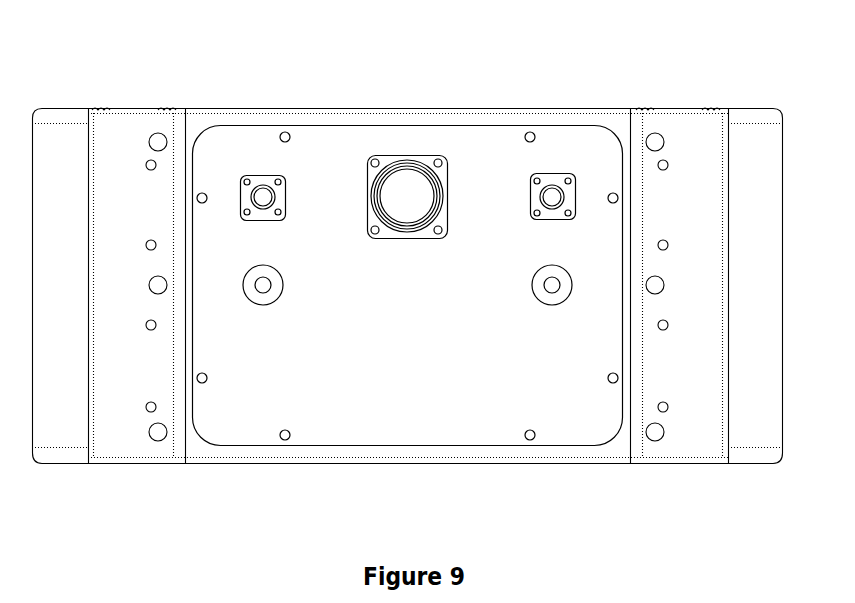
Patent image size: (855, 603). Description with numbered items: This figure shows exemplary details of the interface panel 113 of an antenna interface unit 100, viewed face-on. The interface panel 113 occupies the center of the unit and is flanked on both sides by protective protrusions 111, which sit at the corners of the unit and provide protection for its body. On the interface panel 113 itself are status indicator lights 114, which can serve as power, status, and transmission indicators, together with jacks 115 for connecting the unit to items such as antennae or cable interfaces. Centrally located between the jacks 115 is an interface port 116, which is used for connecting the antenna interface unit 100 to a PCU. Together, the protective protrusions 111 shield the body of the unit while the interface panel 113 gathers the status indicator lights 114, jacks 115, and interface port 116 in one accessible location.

The housing assembly 100 is at (507, 74).
The protective protrusions 111 is at (65, 150).
The interface panel 113 is at (433, 400).
The status indicator lights 114 is at (277, 300).
The jacks 115 is at (280, 215).
The interface port 116 is at (378, 163).